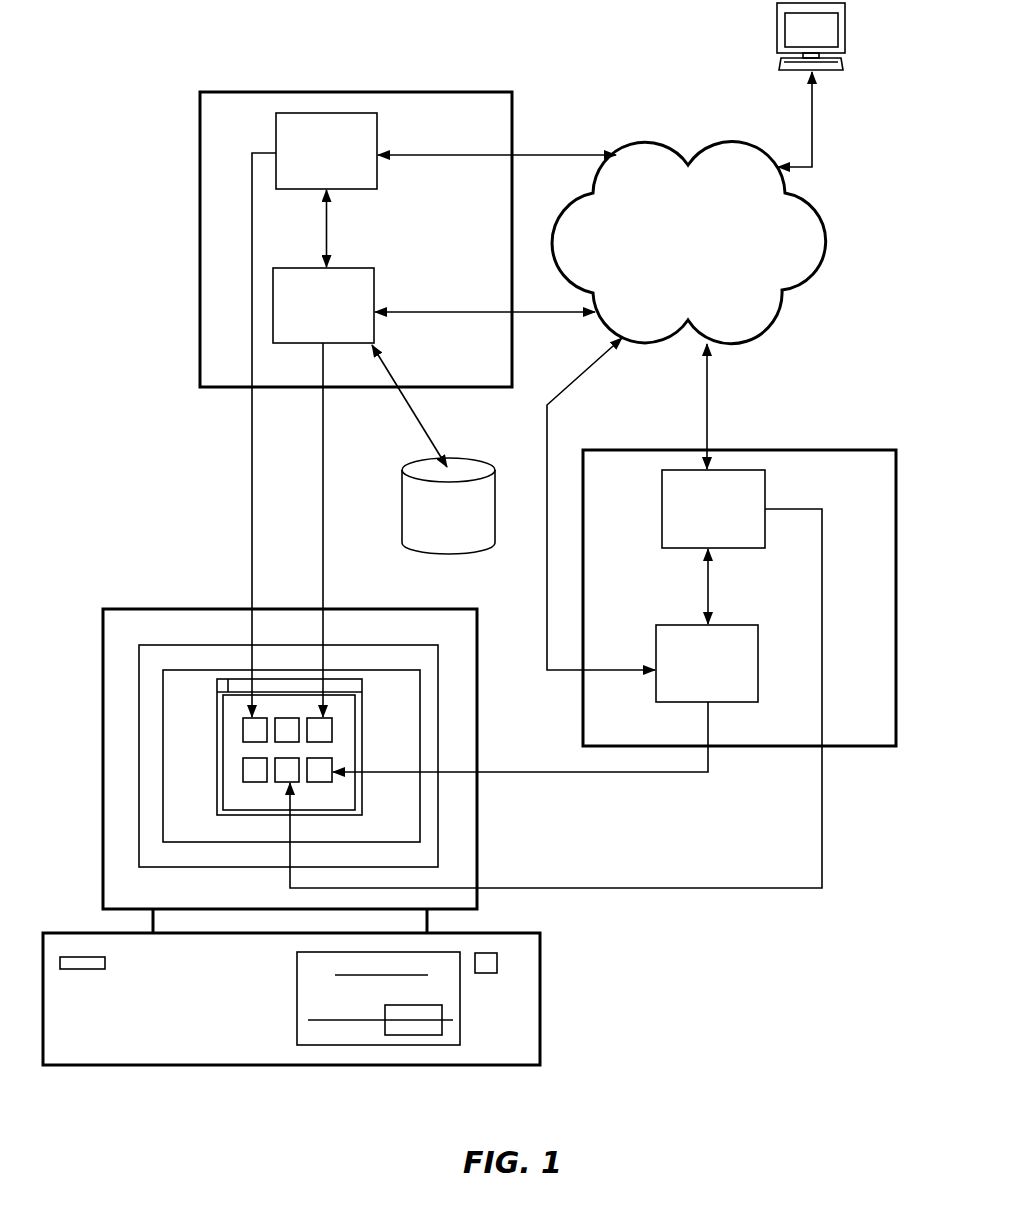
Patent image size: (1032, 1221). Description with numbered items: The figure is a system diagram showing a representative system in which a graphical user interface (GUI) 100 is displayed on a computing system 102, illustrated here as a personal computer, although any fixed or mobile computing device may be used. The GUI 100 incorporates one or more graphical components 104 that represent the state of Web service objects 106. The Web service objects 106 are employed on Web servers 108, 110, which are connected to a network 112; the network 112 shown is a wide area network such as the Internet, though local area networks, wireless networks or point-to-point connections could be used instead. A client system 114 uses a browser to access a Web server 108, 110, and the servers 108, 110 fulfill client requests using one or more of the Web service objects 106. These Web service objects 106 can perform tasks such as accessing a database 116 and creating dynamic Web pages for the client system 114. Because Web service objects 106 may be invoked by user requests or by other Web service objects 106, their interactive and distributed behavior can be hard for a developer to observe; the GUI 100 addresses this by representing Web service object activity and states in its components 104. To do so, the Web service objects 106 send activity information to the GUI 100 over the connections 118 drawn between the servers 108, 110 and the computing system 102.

The graphical user interface 100 is at (362, 720).
The computing system 102 is at (527, 1066).
The graphical components 104 is at (242, 734).
The Web service objects 106 is at (378, 125).
The Web server 108 is at (340, 92).
The Web server 110 is at (837, 746).
The network 112 is at (757, 328).
The client system 114 is at (777, 28).
The database 116 is at (452, 553).
The connections 118 is at (252, 536).